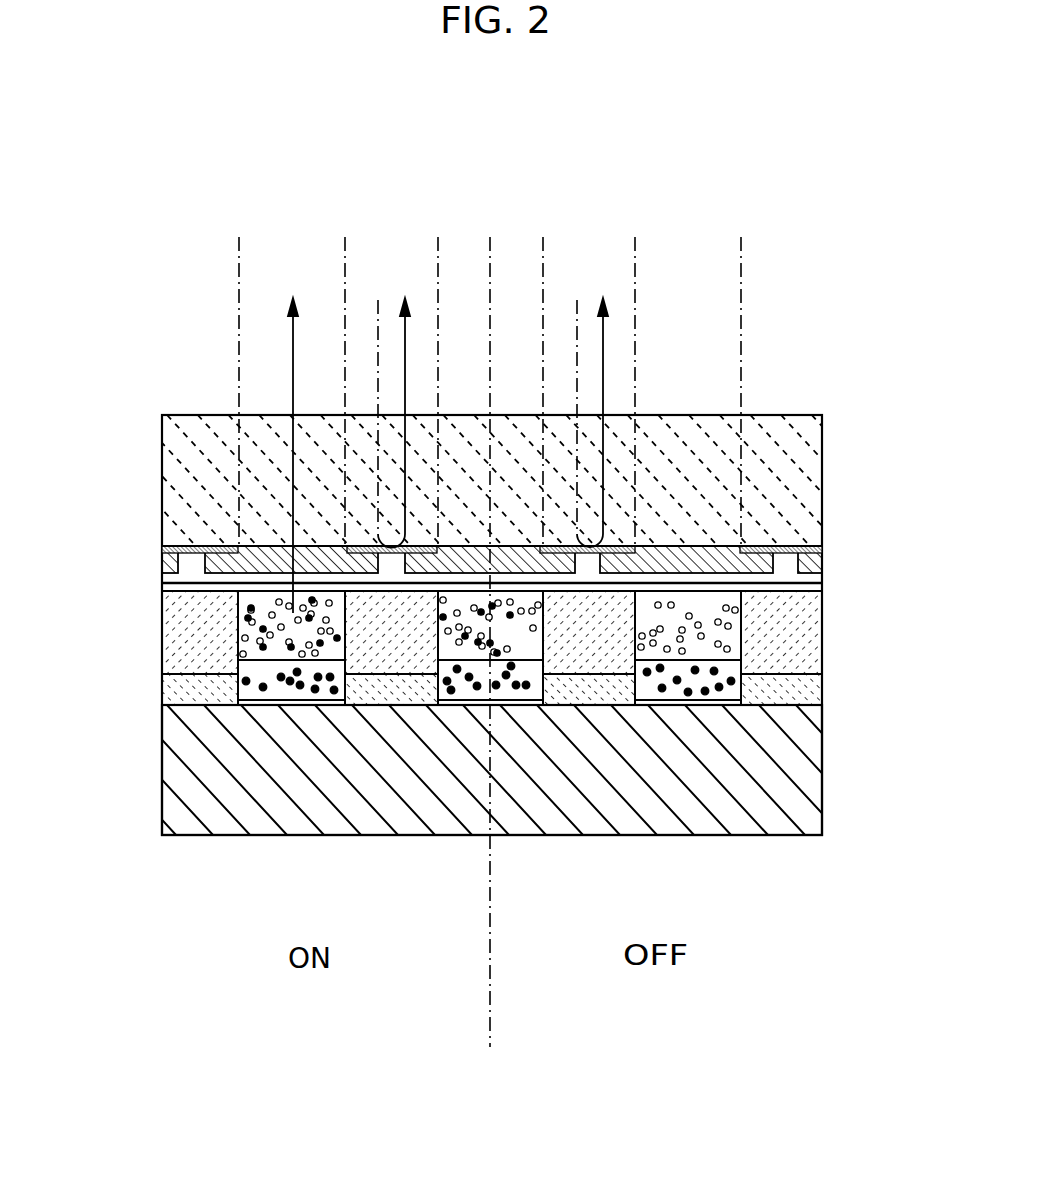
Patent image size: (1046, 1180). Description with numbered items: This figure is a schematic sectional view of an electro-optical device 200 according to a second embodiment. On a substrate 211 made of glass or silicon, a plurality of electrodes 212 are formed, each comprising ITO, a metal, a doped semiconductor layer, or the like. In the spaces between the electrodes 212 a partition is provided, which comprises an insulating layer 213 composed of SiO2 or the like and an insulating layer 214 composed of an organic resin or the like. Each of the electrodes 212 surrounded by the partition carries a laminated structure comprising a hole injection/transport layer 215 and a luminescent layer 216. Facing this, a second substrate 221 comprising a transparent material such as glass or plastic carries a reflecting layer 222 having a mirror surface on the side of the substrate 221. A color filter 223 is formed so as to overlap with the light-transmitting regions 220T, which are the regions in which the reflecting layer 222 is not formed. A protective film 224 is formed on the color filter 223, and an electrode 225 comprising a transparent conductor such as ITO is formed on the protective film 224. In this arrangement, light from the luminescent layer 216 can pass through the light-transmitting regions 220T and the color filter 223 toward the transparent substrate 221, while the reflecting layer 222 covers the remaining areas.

The electrophoretic display device 200 is at (488, 92).
The substrate 211 is at (162, 778).
The electrodes 212 is at (250, 706).
The insulating layer 213 is at (813, 703).
The insulating layer 214 is at (800, 643).
The hole injection/transport layer 215 is at (727, 673).
The luminescent layer 216 is at (240, 632).
The light-transmitting regions 220T is at (239, 237).
The substrate 221 is at (162, 487).
The reflecting layer 222 is at (807, 547).
The color filter 223 is at (162, 562).
The protective film 224 is at (815, 583).
The electrode 225 is at (175, 591).